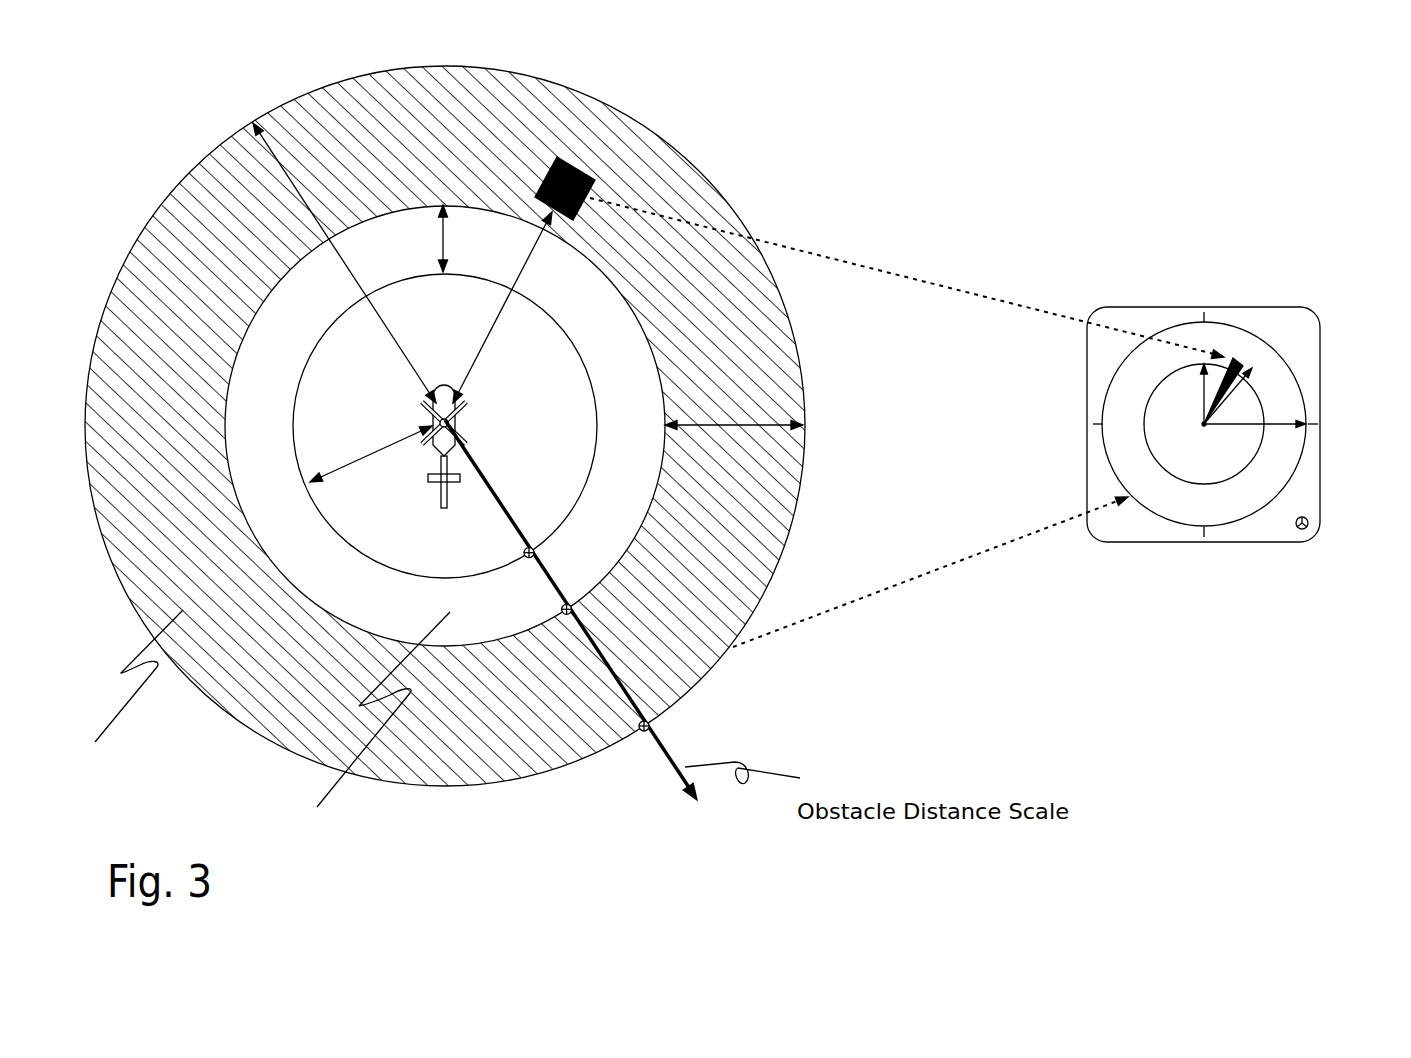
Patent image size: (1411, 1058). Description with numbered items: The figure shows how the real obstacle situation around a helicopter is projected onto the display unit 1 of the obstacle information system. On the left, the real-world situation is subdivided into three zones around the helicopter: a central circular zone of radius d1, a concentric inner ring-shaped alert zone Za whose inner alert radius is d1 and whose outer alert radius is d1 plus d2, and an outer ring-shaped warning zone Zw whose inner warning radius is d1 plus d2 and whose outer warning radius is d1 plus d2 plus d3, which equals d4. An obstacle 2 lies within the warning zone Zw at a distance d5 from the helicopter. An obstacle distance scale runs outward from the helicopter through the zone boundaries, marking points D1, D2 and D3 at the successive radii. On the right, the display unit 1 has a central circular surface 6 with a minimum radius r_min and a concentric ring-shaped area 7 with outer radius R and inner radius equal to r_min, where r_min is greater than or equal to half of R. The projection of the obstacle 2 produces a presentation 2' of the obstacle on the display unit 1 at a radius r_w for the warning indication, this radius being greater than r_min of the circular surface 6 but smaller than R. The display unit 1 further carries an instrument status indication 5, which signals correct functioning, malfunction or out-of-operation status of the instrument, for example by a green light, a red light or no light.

The display unit 1 is at (1152, 581).
The obstacle 2 is at (668, 125).
The presentation of the obstacle 2' is at (1253, 332).
The instrument status indication 5 is at (1310, 523).
The central circular surface 6 is at (1227, 470).
The concentric ring-shaped area 7 is at (1273, 375).
The radius of the central circular zone d1 is at (352, 467).
The alert zone width d2 is at (444, 223).
The warning zone width d3 is at (753, 426).
The outer warning radius d4 is at (344, 263).
The distance of the obstacle from the helicopter d5 is at (502, 307).
The scale point D1 is at (540, 539).
The scale point D2 is at (579, 596).
The scale point D3 is at (663, 732).
The outer ring shaped warning zone Zw is at (121, 704).
The concentric inner ring shaped alert zone Za is at (361, 726).